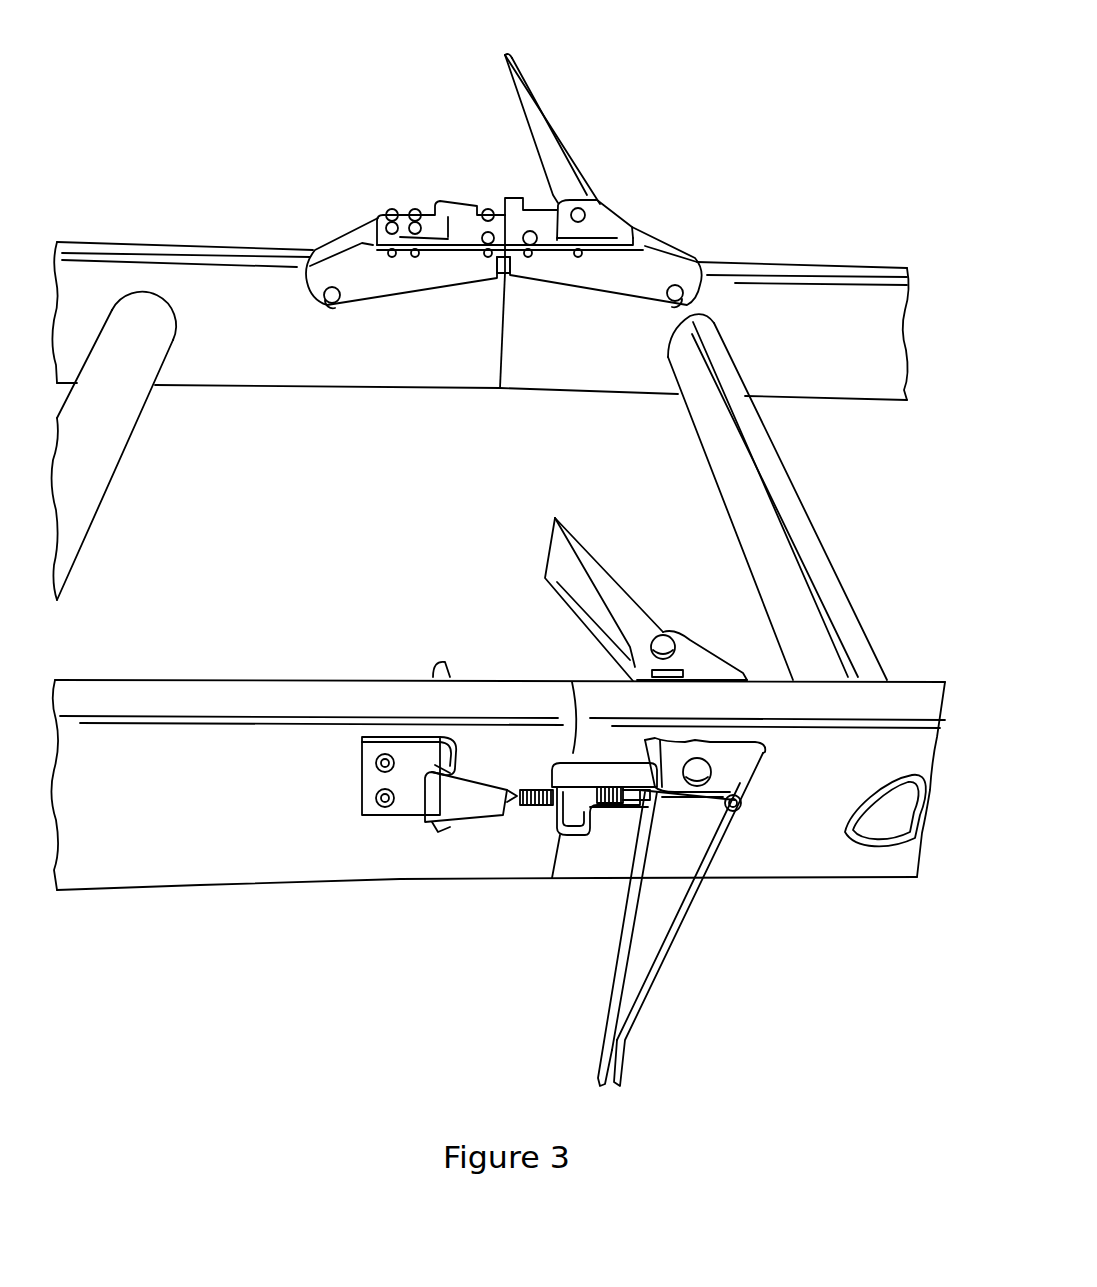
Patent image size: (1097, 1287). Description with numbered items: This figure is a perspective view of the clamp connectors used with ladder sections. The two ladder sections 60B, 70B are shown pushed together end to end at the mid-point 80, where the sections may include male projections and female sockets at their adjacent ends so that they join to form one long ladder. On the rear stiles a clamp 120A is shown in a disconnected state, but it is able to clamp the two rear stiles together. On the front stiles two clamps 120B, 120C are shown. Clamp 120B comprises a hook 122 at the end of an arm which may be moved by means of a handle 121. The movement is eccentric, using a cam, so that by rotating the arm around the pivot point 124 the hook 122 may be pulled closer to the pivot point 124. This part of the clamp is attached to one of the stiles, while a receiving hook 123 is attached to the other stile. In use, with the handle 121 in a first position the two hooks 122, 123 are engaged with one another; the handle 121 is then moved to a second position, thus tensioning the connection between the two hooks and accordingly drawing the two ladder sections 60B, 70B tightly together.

The ladder section 60B is at (188, 207).
The ladder section 70B is at (805, 232).
The mid-point 80 is at (492, 408).
The clamp 120A is at (692, 90).
The clamp 120B is at (593, 850).
The clamp 120C is at (612, 560).
The handle 121 is at (648, 943).
The hook 122 is at (467, 812).
The receiving hook 123 is at (457, 763).
The pivot point 124 is at (713, 768).